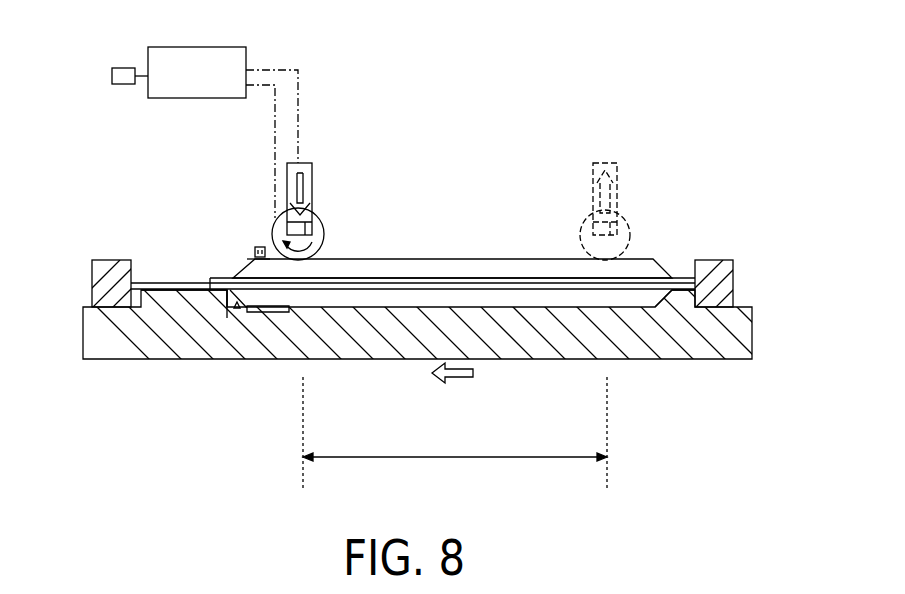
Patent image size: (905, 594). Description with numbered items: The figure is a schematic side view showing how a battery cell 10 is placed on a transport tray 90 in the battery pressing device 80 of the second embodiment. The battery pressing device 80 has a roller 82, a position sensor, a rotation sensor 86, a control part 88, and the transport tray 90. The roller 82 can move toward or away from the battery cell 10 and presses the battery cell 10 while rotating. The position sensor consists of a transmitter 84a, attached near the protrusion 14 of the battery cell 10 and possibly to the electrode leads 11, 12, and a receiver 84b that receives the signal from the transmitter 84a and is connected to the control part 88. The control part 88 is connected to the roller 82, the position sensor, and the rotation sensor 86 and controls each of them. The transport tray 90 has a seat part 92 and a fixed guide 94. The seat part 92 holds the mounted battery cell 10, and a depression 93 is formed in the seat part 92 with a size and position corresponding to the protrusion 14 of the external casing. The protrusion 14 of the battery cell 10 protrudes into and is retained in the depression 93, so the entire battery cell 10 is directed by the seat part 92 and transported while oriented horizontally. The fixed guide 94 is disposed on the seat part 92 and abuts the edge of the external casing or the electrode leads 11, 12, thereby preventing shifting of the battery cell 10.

The battery pressing device 80 is at (57, 60).
The receiver 84b is at (120, 68).
The control part 88 is at (228, 47).
The rotation sensor 86 is at (316, 226).
The roller 82 is at (327, 237).
The battery cell 10 is at (492, 259).
The protrusion 14 is at (253, 258).
The transmitter 84a is at (258, 246).
The electrode lead 11 is at (413, 258).
The electrode lead 12 is at (177, 283).
The fixed guide 94 is at (113, 260).
The transport tray 90 is at (753, 324).
The seat part 92 is at (83, 331).
The depression 93 is at (238, 291).